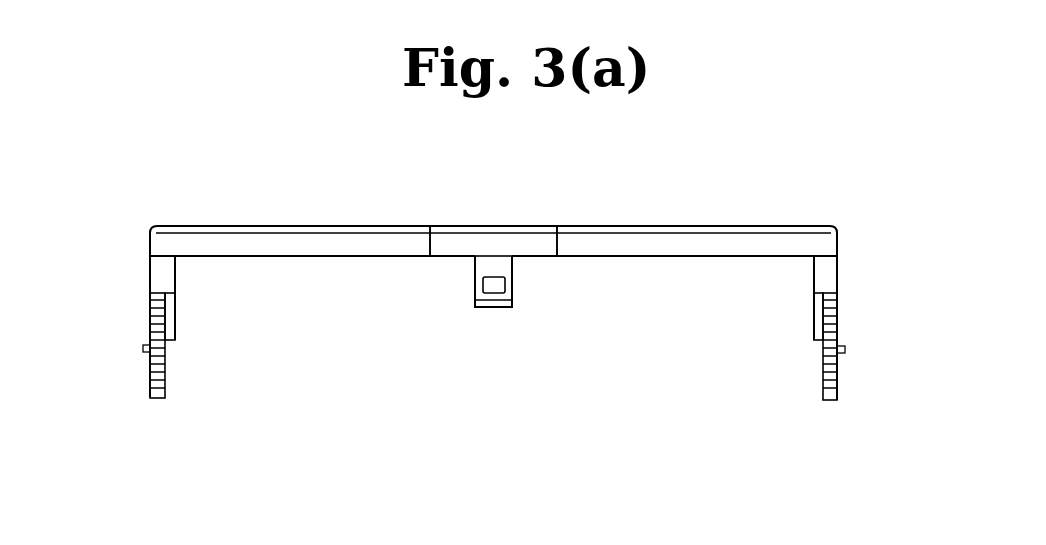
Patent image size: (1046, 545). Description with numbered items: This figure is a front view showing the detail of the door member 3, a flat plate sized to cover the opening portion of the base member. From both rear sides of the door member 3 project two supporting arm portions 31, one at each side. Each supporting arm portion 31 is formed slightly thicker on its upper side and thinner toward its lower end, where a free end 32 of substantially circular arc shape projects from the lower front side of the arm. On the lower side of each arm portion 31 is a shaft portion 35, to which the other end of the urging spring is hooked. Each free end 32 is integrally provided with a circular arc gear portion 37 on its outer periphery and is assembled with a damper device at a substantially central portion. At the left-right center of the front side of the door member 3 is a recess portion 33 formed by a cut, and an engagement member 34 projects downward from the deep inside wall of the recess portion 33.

The door member 3 is at (276, 224).
The supporting arm portion 31 is at (163, 278).
The free end 32 is at (498, 406).
The recess portion 33 is at (533, 227).
The engagement member 34 is at (505, 287).
The shaft portion 35 is at (143, 348).
The circular arc gear portion 37 is at (161, 401).